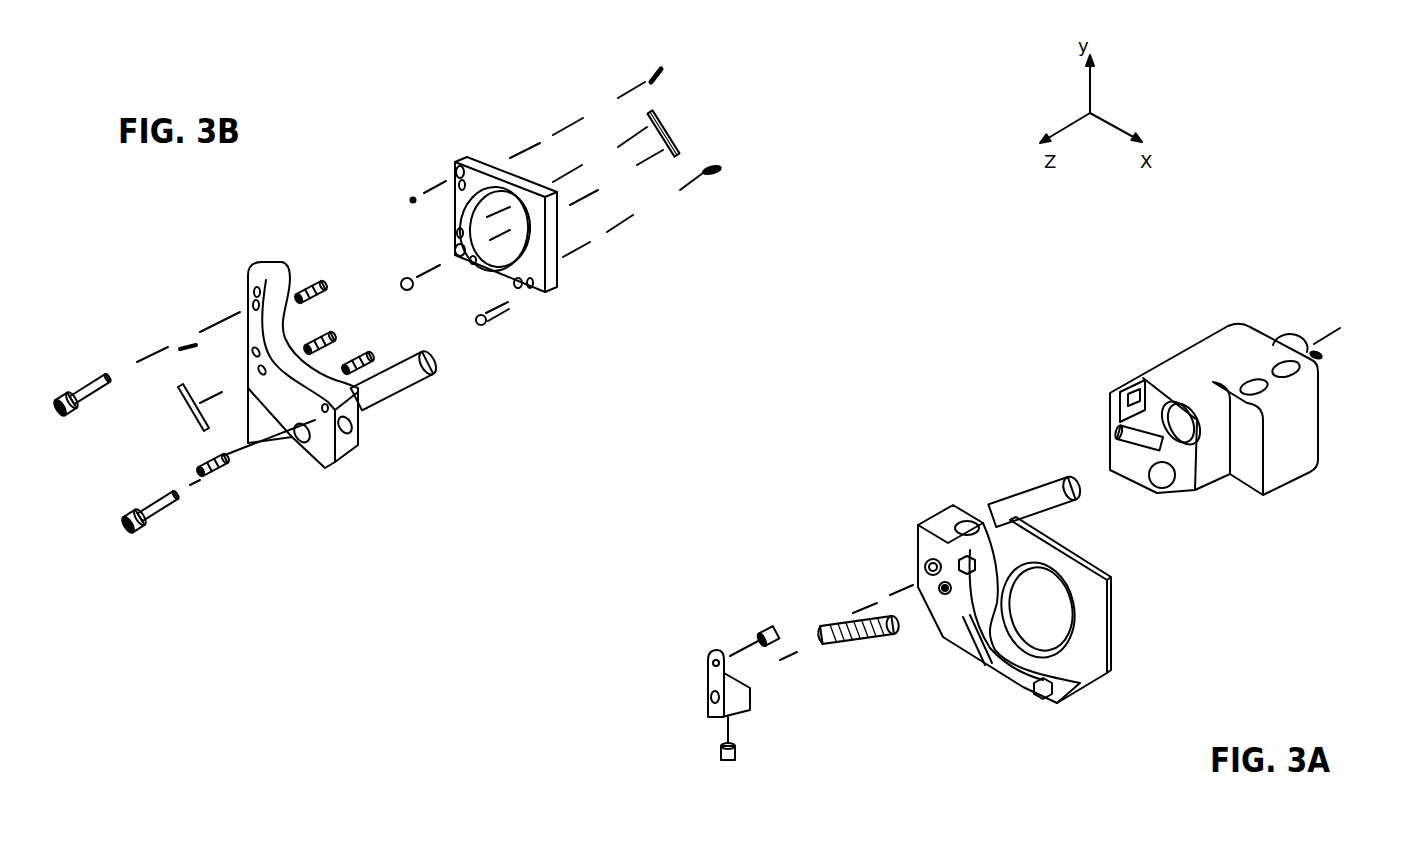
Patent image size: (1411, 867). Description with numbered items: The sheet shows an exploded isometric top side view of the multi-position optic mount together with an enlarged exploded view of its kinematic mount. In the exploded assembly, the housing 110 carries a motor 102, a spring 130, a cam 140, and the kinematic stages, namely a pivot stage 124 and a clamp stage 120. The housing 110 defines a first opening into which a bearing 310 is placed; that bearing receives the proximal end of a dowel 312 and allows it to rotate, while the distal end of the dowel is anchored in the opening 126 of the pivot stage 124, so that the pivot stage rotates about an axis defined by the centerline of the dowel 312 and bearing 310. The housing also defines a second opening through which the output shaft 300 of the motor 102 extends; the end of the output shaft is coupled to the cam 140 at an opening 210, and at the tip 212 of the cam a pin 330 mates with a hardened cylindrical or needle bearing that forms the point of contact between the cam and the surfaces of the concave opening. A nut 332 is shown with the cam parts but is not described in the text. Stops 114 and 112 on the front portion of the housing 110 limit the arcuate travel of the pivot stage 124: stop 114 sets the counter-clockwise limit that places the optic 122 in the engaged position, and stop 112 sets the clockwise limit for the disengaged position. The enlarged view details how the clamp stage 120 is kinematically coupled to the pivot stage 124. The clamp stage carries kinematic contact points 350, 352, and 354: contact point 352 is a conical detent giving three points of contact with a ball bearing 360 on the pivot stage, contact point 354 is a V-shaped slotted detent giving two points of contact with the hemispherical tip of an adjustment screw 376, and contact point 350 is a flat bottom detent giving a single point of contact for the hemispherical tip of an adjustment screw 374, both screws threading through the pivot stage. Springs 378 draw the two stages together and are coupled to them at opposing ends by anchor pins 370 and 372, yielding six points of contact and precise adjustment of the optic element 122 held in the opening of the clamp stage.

In FIG. 3A, the motor 102 is at (1293, 340).
In FIG. 3A, the housing 110 is at (1290, 465).
In FIG. 3A, the stop 112 is at (1163, 478).
In FIG. 3A, the stop 114 is at (1145, 388).
In FIG. 3B, the clamp stage 120 is at (556, 236).
In FIG. 3A, the clamp stage 120 is at (1110, 577).
In FIG. 3B, the optic 122 is at (470, 262).
In FIG. 3A, the optic 122 is at (1047, 607).
In FIG. 3B, the pivot stage 124 is at (266, 272).
In FIG. 3A, the pivot stage 124 is at (935, 506).
In FIG. 3B, the opening 126 is at (297, 443).
In FIG. 3A, the opening 126 is at (916, 578).
In FIG. 3A, the spring 130 is at (862, 637).
In FIG. 3A, the cam 140 is at (768, 708).
In FIG. 3A, the opening 210 is at (707, 702).
In FIG. 3A, the tip 212 is at (710, 665).
In FIG. 3A, the output shaft 300 is at (1118, 457).
In FIG. 3A, the bearing 310 is at (1184, 436).
In FIG. 3B, the dowel 312 is at (402, 378).
In FIG. 3A, the dowel 312 is at (1072, 503).
In FIG. 3A, the pin 330 is at (736, 655).
In FIG. 3A, the nut 332 is at (772, 630).
In FIG. 3B, the kinematic contact point 350 is at (457, 172).
In FIG. 3B, the kinematic contact point 352 is at (457, 248).
In FIG. 3B, the kinematic contact point 354 is at (533, 295).
In FIG. 3B, the ball bearing 360 is at (408, 290).
In FIG. 3B, the anchor pin 370 is at (203, 398).
In FIG. 3B, the anchor pin 372 is at (714, 172).
In FIG. 3B, the adjustment screw 374 is at (99, 396).
In FIG. 3B, the adjustment screw 376 is at (162, 495).
In FIG. 3B, the springs 378 is at (342, 383).